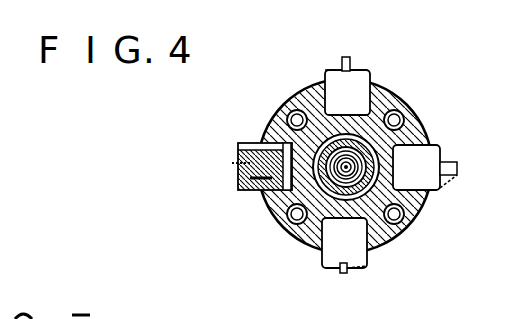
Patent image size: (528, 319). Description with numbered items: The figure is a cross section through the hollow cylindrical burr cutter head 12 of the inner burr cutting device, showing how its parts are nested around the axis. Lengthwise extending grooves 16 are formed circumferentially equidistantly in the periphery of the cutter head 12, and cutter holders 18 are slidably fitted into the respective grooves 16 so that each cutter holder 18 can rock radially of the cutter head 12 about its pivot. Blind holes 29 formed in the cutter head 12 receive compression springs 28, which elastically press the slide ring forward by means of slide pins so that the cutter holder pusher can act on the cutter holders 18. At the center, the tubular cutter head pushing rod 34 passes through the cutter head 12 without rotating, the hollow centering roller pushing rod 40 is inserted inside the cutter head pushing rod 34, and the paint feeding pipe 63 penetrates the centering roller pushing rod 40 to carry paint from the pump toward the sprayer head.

The cutter head 12 is at (313, 244).
The grooves 16 is at (258, 142).
The cutter holders 18 is at (352, 60).
The compression springs 28 is at (287, 117).
The blind holes 29 is at (298, 110).
The cutter head pushing rod 34 is at (368, 157).
The centering roller pushing rod 40 is at (352, 164).
The paint feeding pipe 63 is at (349, 172).